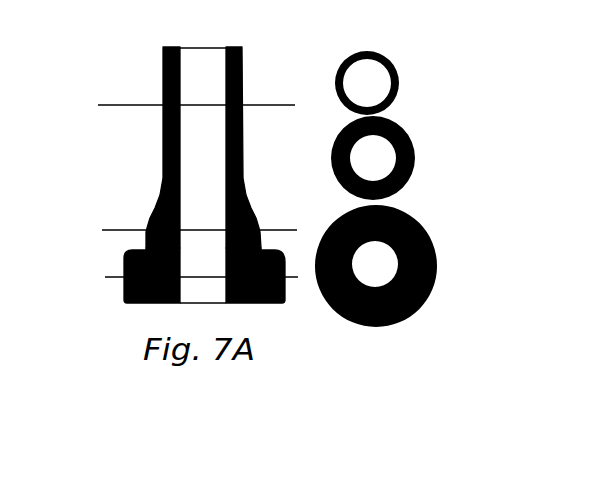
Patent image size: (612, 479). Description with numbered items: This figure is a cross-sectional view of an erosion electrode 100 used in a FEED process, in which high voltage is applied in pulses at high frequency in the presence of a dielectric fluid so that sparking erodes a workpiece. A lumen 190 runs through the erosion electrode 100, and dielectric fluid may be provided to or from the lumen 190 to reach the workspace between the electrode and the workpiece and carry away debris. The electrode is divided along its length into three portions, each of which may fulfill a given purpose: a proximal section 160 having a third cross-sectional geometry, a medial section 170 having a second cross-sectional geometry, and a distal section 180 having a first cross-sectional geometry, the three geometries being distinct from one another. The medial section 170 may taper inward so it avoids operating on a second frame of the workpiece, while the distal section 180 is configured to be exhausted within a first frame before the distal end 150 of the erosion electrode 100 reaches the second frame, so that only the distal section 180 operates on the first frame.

The erosion electrode 100 is at (162, 150).
The distal end 150 is at (163, 303).
The proximal section 160 is at (115, 105).
The medial section 170 is at (112, 230).
The distal section 180 is at (112, 277).
The lumen 190 is at (200, 198).